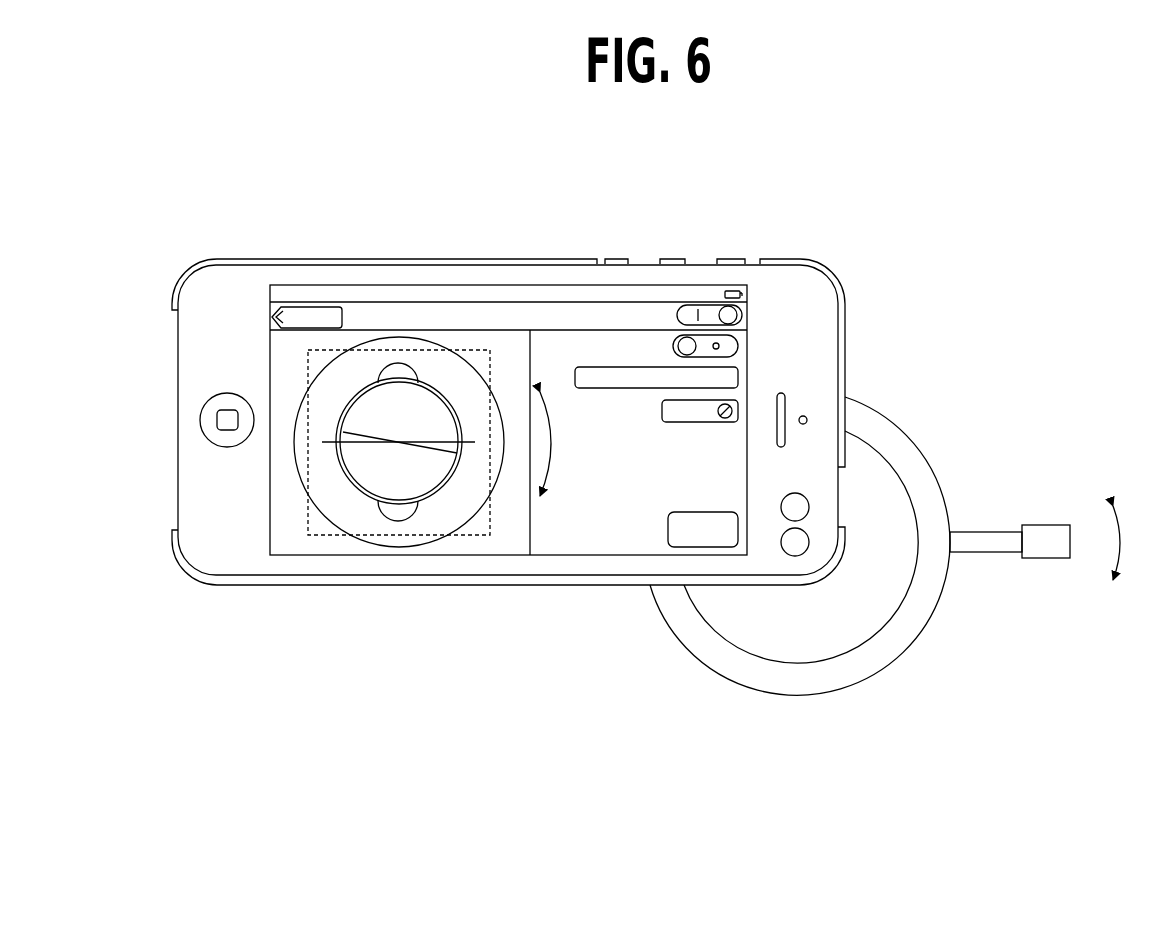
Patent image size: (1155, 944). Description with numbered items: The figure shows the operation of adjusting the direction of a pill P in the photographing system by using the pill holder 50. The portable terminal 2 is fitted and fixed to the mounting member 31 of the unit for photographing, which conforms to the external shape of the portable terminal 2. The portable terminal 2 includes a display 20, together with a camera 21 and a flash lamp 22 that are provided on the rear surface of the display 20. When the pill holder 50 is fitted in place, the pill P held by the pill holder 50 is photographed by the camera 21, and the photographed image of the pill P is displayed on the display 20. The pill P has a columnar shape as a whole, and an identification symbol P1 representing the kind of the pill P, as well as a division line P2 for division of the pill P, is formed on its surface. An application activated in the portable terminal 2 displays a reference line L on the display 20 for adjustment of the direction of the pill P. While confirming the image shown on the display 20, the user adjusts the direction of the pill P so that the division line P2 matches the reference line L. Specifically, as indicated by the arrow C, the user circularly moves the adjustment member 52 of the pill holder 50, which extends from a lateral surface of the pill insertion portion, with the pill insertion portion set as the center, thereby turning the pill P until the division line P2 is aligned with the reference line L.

The portable terminal 2 is at (244, 273).
The mounting member 31 is at (372, 257).
The display 20 is at (688, 280).
The camera 21 is at (794, 557).
The flash lamp 22 is at (781, 510).
The pill holder 50 is at (958, 411).
The adjustment member 52 is at (1045, 540).
The pill P is at (437, 381).
The identification symbol P1 is at (389, 405).
The division line P2 is at (435, 457).
The reference line L is at (352, 445).
The arrow C is at (1128, 543).